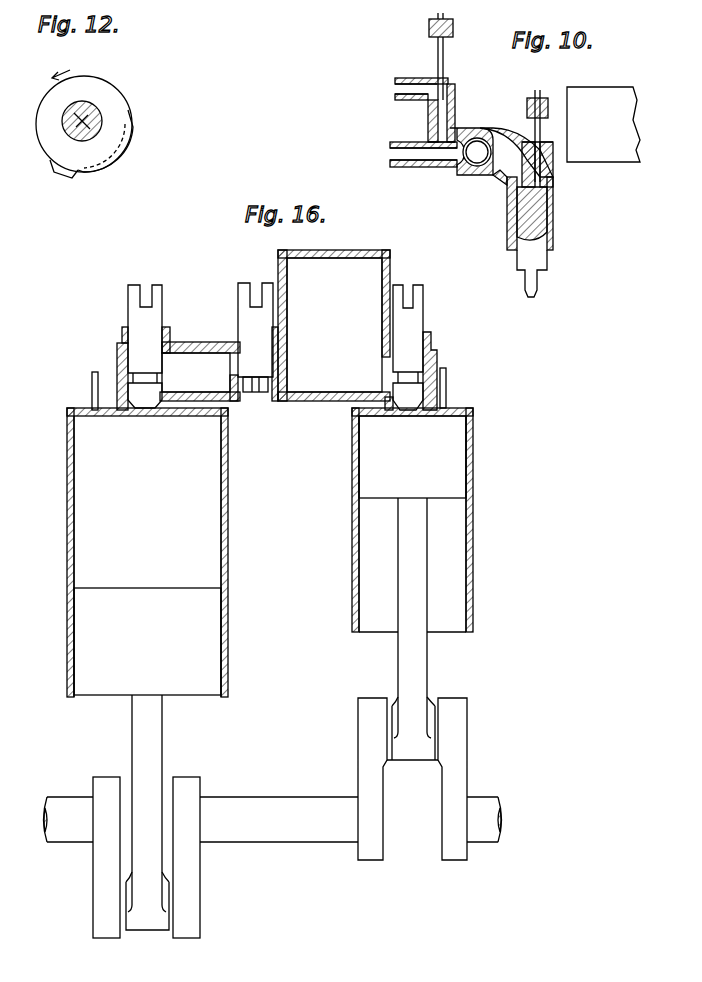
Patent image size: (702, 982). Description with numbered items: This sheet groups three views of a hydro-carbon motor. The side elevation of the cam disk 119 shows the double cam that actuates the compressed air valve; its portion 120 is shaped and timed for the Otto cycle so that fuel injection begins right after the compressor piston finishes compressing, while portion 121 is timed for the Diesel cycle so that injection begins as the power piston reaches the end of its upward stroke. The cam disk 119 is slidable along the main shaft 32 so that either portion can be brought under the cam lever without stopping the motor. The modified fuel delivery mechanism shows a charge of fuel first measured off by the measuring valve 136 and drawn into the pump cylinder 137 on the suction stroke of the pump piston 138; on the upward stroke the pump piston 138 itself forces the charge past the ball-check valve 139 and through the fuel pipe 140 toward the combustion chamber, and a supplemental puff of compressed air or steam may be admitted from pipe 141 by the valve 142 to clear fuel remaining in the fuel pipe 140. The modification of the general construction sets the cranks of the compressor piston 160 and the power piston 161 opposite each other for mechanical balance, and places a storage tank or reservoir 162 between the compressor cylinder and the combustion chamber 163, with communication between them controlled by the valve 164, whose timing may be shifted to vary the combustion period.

In FIG. 12, the shaft 32 is at (92, 112).
In FIG. 12, the cam disk 119 is at (100, 88).
In FIG. 12, the Otto cycle cam portion 120 is at (121, 151).
In FIG. 12, the Diesel cycle cam portion 121 is at (52, 173).
In FIG. 10, the measuring valve 136 is at (553, 190).
In FIG. 10, the pump cylinder 137 is at (555, 215).
In FIG. 10, the pump piston 138 is at (520, 250).
In FIG. 10, the ball-check valve 139 is at (478, 147).
In FIG. 10, the fuel pipe 140 is at (392, 168).
In FIG. 10, the compressed air pipe 141 is at (400, 90).
In FIG. 10, the valve 142 is at (455, 92).
In FIG. 16, the compressor piston 160 is at (433, 453).
In FIG. 16, the power piston 161 is at (180, 617).
In FIG. 16, the storage tank or reservoir 162 is at (334, 325).
In FIG. 16, the combustion chamber 163 is at (200, 371).
In FIG. 16, the valve 164 is at (254, 342).